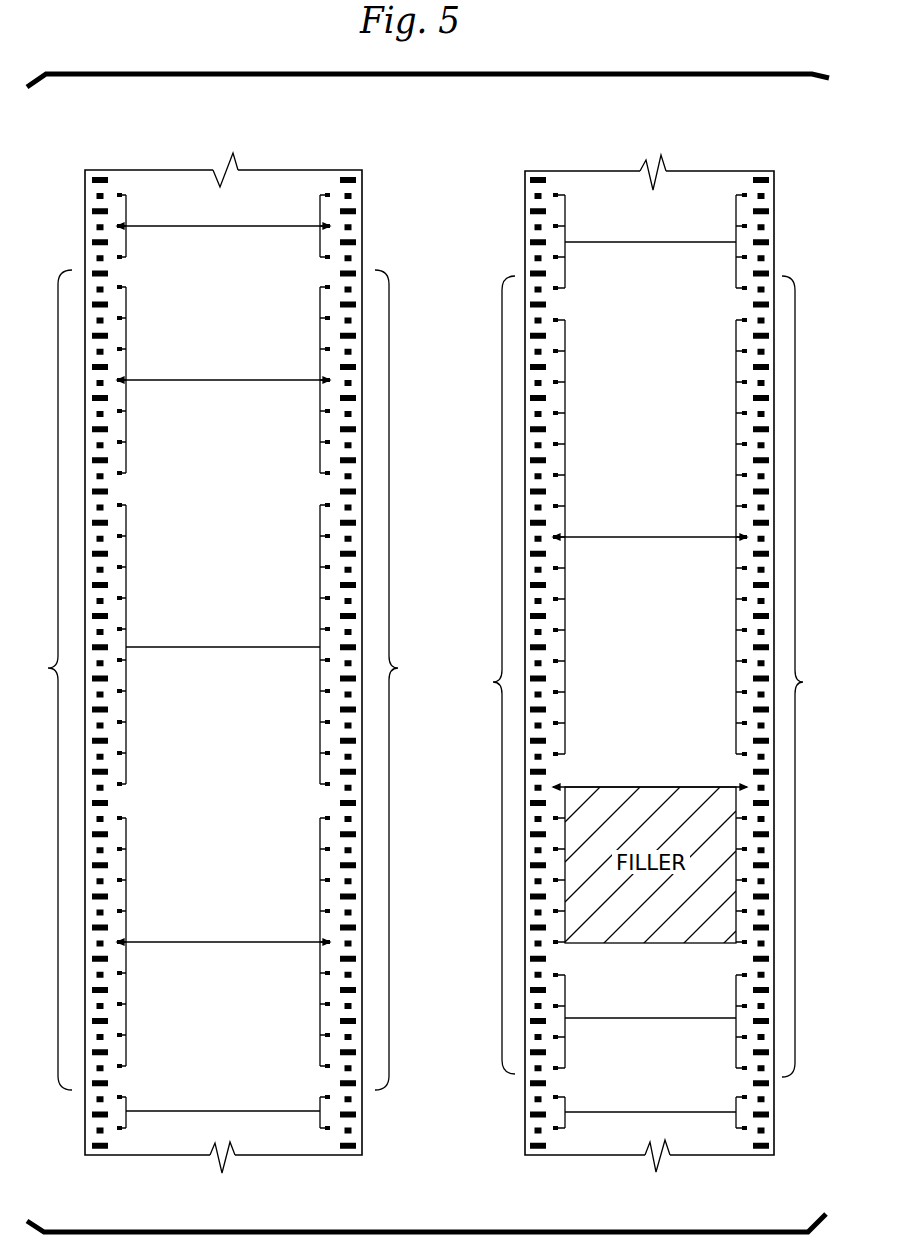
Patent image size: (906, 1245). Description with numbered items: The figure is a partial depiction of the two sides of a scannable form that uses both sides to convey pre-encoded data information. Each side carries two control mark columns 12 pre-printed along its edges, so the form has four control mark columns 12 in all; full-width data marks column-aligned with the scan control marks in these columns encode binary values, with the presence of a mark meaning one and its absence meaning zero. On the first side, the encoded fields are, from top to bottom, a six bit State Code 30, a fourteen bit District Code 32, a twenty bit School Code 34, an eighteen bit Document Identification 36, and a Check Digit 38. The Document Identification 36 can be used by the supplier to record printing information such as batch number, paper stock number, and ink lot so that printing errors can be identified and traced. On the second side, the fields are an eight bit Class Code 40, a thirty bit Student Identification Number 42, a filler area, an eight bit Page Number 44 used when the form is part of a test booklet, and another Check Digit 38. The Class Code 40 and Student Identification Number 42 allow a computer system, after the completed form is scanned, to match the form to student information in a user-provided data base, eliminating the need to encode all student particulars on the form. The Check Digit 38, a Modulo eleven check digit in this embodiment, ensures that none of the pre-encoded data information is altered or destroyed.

The control mark column 12 is at (429, 663).
The State Code 30 is at (182, 212).
The District Code 32 is at (213, 348).
The School Code 34 is at (230, 613).
The Document Identification 36 is at (208, 915).
The Check Digit 38 is at (208, 1080).
The Class Code 40 is at (620, 227).
The Student Identification Number 42 is at (635, 512).
The Page Number 44 is at (630, 990).